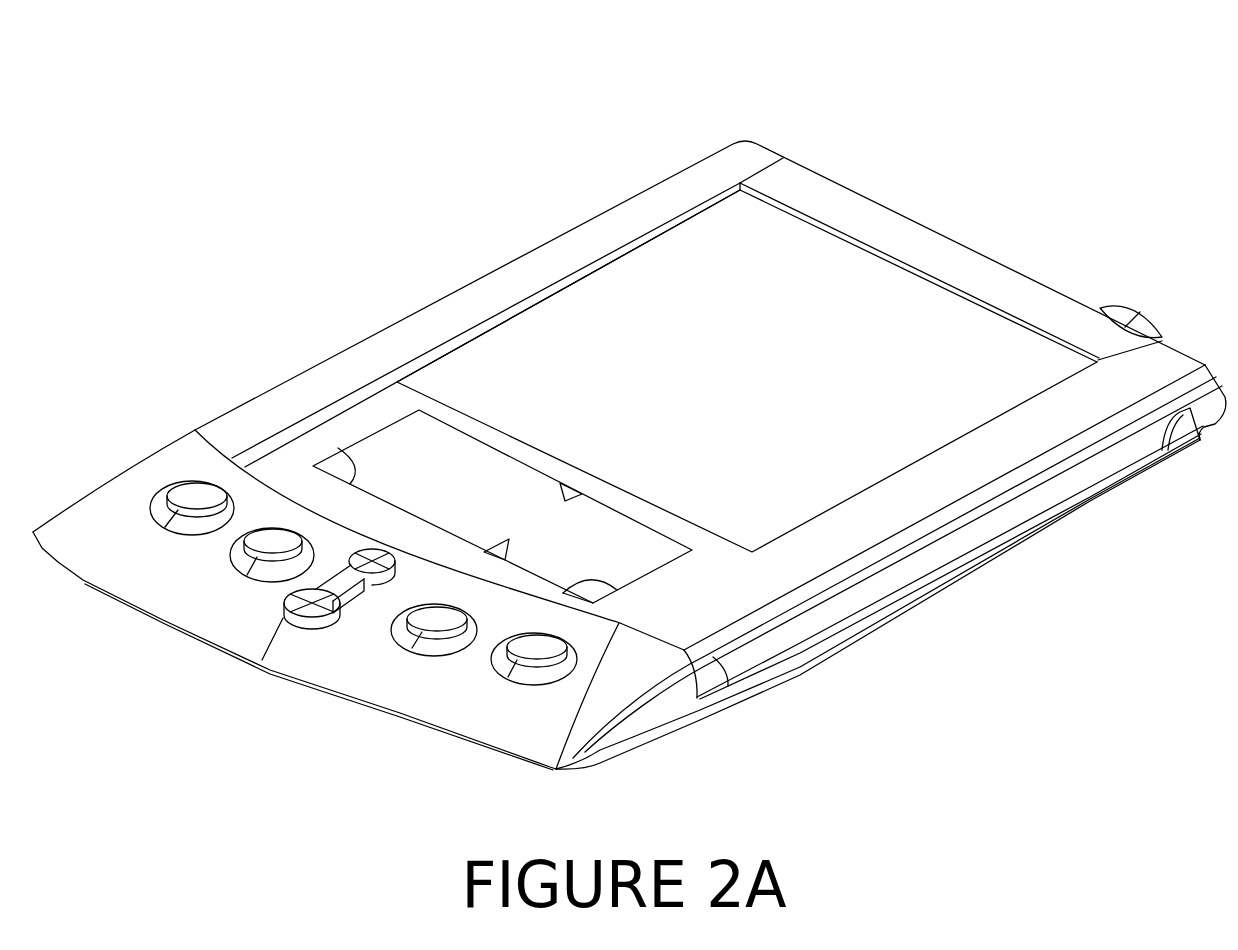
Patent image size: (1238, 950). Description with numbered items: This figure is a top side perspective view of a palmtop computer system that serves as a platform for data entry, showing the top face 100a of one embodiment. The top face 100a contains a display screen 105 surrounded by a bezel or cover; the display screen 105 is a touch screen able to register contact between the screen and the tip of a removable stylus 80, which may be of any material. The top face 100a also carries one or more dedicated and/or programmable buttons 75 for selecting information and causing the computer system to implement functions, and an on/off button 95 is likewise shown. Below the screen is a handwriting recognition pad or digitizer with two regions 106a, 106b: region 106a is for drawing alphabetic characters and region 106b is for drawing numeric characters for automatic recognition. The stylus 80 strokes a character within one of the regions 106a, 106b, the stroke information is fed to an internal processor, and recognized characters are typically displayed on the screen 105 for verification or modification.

The top face 100a is at (117, 45).
The display screen 105 is at (770, 273).
The region for alphabetic characters 106a is at (459, 490).
The region for numeric characters 106b is at (617, 563).
The buttons 75 is at (180, 493).
The stylus 80 is at (913, 558).
The on/off button 95 is at (1117, 302).